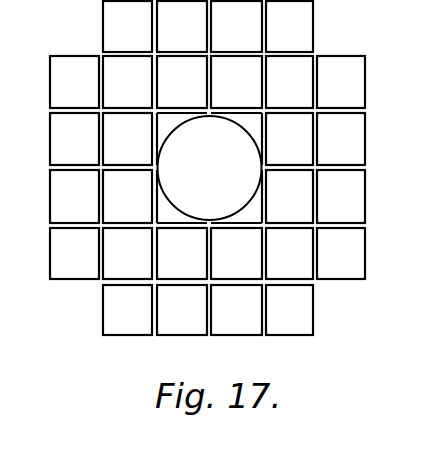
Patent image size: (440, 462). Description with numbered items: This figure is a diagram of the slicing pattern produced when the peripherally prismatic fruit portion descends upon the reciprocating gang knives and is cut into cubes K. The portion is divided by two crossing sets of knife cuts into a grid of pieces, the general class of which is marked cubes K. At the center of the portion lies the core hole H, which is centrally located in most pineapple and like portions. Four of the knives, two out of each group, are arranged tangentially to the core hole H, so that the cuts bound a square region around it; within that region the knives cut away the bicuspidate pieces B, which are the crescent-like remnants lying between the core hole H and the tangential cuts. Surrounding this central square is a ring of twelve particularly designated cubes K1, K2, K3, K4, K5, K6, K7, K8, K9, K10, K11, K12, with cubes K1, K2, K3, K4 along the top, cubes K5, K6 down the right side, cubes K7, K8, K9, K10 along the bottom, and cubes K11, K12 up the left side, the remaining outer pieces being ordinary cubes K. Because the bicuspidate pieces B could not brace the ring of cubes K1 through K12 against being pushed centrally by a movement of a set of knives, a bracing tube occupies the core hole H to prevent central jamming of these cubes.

The cubes K is at (353, 153).
The cube K1 is at (127, 82).
The cube K2 is at (182, 82).
The cube K3 is at (236, 82).
The cube K4 is at (289, 82).
The cube K5 is at (289, 139).
The cube K6 is at (289, 196).
The cube K7 is at (289, 253).
The cube K8 is at (236, 253).
The cube K9 is at (182, 253).
The cube K10 is at (127, 253).
The cube K11 is at (127, 196).
The cube K12 is at (127, 139).
The bicuspidate pieces B is at (247, 125).
The core hole H is at (185, 186).